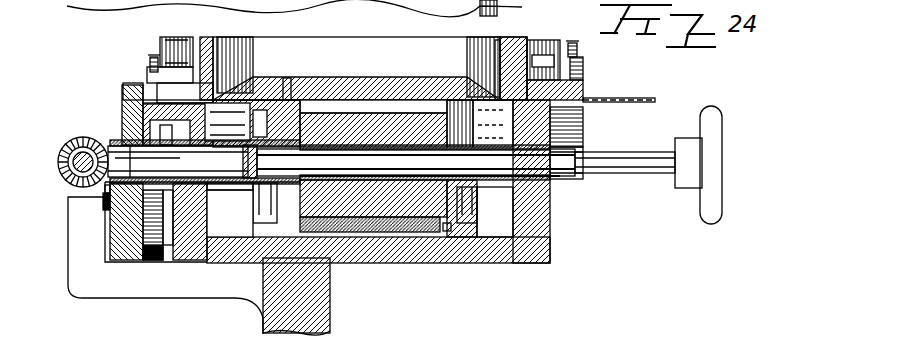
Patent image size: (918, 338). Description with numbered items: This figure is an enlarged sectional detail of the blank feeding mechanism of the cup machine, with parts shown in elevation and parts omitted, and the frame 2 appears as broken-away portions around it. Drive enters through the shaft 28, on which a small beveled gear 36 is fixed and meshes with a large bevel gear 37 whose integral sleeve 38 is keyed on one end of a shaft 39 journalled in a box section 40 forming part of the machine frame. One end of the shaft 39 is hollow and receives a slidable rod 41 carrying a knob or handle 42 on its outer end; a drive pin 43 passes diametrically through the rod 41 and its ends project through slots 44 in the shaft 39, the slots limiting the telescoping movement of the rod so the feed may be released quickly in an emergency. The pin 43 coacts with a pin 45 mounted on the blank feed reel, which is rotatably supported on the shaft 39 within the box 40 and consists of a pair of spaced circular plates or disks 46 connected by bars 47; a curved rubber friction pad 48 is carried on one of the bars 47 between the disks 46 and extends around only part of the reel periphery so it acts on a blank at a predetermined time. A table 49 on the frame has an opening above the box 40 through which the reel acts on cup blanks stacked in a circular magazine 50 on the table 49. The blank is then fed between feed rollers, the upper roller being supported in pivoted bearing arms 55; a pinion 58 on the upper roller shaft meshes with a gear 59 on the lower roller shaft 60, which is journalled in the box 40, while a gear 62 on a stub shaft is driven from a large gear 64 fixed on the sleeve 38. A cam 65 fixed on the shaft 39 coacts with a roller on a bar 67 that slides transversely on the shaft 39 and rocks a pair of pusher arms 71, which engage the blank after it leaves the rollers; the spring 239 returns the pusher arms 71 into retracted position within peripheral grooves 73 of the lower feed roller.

The frame/bed 2 is at (100, 0).
The shaft 28 is at (73, 143).
The small beveled gear 36 is at (112, 196).
The large bevel gear 37 is at (116, 100).
The sleeve 38 is at (75, 219).
The shaft 39 is at (182, 161).
The box section 40 is at (503, 258).
The slidable rod 41 is at (641, 173).
The knob or handle 42 is at (713, 192).
The drive pin 43 is at (416, 162).
The slots 44 is at (553, 235).
The pin 45 is at (458, 132).
The circular plates or disks 46 is at (308, 100).
The bars 47 is at (367, 128).
The blank feed friction pad 48 is at (420, 232).
The table 49 is at (650, 100).
The circular magazine 50 is at (243, 63).
The pivoted bearing arms 55 is at (190, 37).
The pinion or gear 58 is at (585, 70).
The gear 59 is at (583, 148).
The lower roller shaft 60 is at (562, 178).
The gear 62 is at (155, 258).
The large gear 64 is at (142, 223).
The cam 65 is at (237, 192).
The bar 67 is at (230, 187).
The pusher arms 71 is at (467, 223).
The peripheral grooves 73 is at (287, 96).
The spring 239 is at (150, 65).